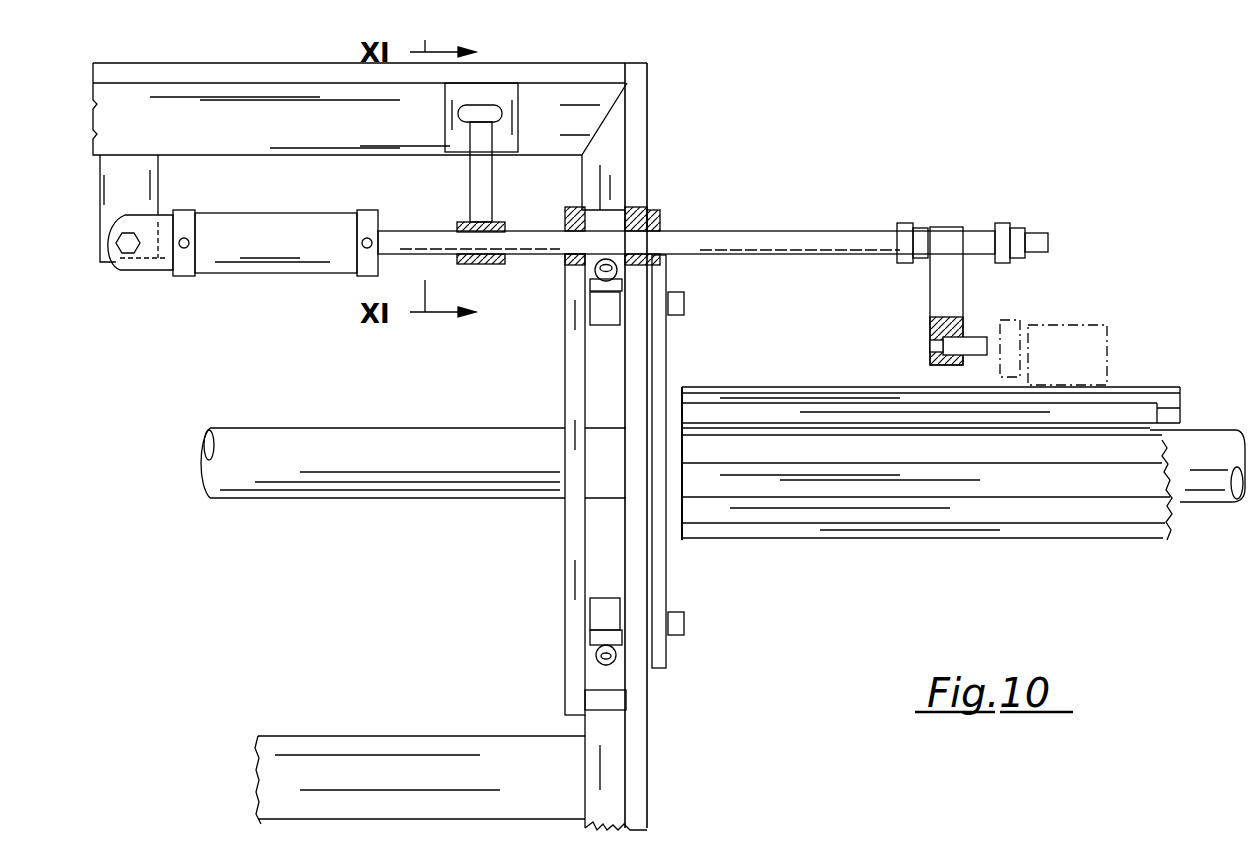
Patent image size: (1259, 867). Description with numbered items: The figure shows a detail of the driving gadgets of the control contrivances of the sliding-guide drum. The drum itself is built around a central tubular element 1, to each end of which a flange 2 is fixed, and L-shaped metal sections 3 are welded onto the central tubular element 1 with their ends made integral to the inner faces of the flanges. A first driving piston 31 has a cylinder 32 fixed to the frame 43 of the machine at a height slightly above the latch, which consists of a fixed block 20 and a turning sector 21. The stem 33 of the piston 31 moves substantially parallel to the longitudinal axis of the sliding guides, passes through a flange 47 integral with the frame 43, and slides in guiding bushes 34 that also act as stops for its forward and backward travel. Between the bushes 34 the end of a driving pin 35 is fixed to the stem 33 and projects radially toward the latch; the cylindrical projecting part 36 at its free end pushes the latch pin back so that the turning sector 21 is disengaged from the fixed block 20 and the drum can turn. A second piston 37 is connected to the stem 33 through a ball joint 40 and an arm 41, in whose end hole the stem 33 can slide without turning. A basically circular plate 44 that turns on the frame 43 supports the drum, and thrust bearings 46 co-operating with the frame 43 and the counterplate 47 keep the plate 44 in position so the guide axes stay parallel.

The central tubular element 1 is at (293, 487).
The flange 2 is at (685, 512).
The L-shaped metal sections 3 is at (1128, 407).
The fixed block 20 is at (1103, 352).
The turning sector 21 is at (1018, 322).
The first driving piston 31 is at (282, 290).
The cylinder 32 is at (209, 255).
The stem 33 is at (830, 232).
The guiding bushes 34 is at (905, 228).
The driving pin 35 is at (935, 288).
The cylindrical projecting part 36 is at (972, 340).
The second piston 37 is at (505, 118).
The ball joint 40 is at (490, 108).
The arm 41 is at (472, 170).
The frame 43 is at (650, 205).
The circular plate 44 is at (660, 340).
The bearings 46 is at (596, 282).
The flange / counterplate 47 is at (570, 680).